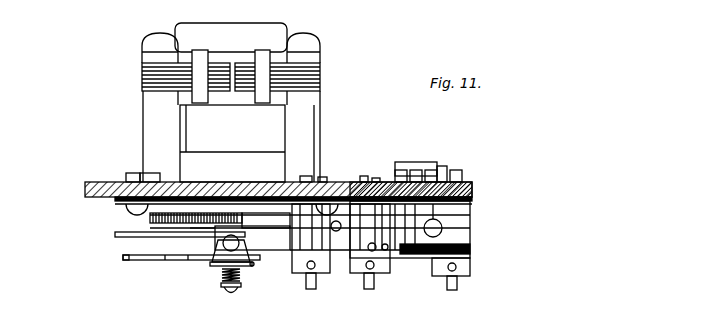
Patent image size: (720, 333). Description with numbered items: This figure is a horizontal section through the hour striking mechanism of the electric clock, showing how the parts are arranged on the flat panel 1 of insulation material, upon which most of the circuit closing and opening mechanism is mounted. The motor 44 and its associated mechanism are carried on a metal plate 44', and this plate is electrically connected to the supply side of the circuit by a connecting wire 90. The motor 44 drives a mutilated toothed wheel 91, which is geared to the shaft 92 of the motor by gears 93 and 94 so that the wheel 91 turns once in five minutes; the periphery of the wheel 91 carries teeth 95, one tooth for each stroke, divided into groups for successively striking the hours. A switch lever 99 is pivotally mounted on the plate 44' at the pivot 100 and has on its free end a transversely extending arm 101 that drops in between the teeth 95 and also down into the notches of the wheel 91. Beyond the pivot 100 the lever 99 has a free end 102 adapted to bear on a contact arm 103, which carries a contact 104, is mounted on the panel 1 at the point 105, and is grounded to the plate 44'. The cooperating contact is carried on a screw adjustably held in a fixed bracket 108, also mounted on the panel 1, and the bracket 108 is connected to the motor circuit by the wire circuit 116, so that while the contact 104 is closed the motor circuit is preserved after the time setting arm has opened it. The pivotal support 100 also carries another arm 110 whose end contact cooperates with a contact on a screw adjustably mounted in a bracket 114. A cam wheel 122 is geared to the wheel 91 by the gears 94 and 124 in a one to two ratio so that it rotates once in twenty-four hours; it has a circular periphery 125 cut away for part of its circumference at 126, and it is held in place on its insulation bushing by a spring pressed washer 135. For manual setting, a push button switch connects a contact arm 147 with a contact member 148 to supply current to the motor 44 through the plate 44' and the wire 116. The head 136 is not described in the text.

The flat panel 1 is at (94, 182).
The motor 44 is at (245, 102).
The metal plate 44' is at (189, 207).
The connecting wire 90 is at (160, 175).
The mutilated toothed wheel 91 is at (125, 258).
The shaft 92 is at (237, 182).
The gear 93 is at (215, 244).
The gear 94 is at (195, 218).
The teeth 95 is at (118, 235).
The switch lever 99 is at (300, 187).
The pivot 100 is at (322, 288).
The transversely extending arm 101 is at (245, 266).
The free end 102 is at (350, 184).
The contact arm 103 is at (470, 254).
The contact 104 is at (372, 276).
The mounting point 105 is at (470, 270).
The fixed bracket 108 is at (365, 276).
The arm 110 is at (447, 190).
The bracket 114 is at (440, 234).
The wire circuit 116 is at (363, 182).
The cam wheel 122 is at (188, 262).
The gear 124 is at (130, 221).
The circular periphery 125 is at (123, 262).
The cut-away portion 126 is at (166, 262).
The spring pressed washer 135 is at (205, 243).
The knob 136 is at (226, 292).
The contact arm 147 is at (440, 176).
The contact member 148 is at (410, 163).